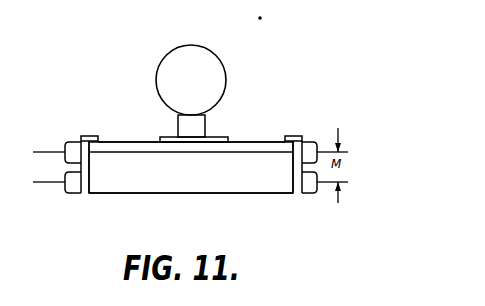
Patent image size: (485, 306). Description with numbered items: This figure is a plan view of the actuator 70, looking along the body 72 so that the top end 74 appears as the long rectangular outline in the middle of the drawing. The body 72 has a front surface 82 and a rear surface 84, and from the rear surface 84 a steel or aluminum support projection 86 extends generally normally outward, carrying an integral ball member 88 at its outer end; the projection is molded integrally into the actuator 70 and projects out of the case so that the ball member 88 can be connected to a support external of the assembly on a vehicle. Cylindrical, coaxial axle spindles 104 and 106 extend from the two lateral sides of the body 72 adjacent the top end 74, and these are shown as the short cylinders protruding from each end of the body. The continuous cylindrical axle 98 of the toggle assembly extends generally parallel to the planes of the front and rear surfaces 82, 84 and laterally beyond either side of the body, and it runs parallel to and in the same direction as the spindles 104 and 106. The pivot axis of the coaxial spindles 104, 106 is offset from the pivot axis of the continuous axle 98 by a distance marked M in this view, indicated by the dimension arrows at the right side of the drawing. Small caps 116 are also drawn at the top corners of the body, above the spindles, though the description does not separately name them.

The actuator 70 is at (240, 65).
The body 72 is at (130, 193).
The top end 74 is at (197, 178).
The front surface 82 is at (210, 194).
The rear surface 84 is at (125, 141).
The support projection 86 is at (195, 128).
The ball member 88 is at (195, 83).
The continuous cylindrical axle 98 is at (73, 147).
The axle spindle 104 is at (72, 190).
The axle spindle 106 is at (298, 185).
The flange cap 116 is at (88, 136).